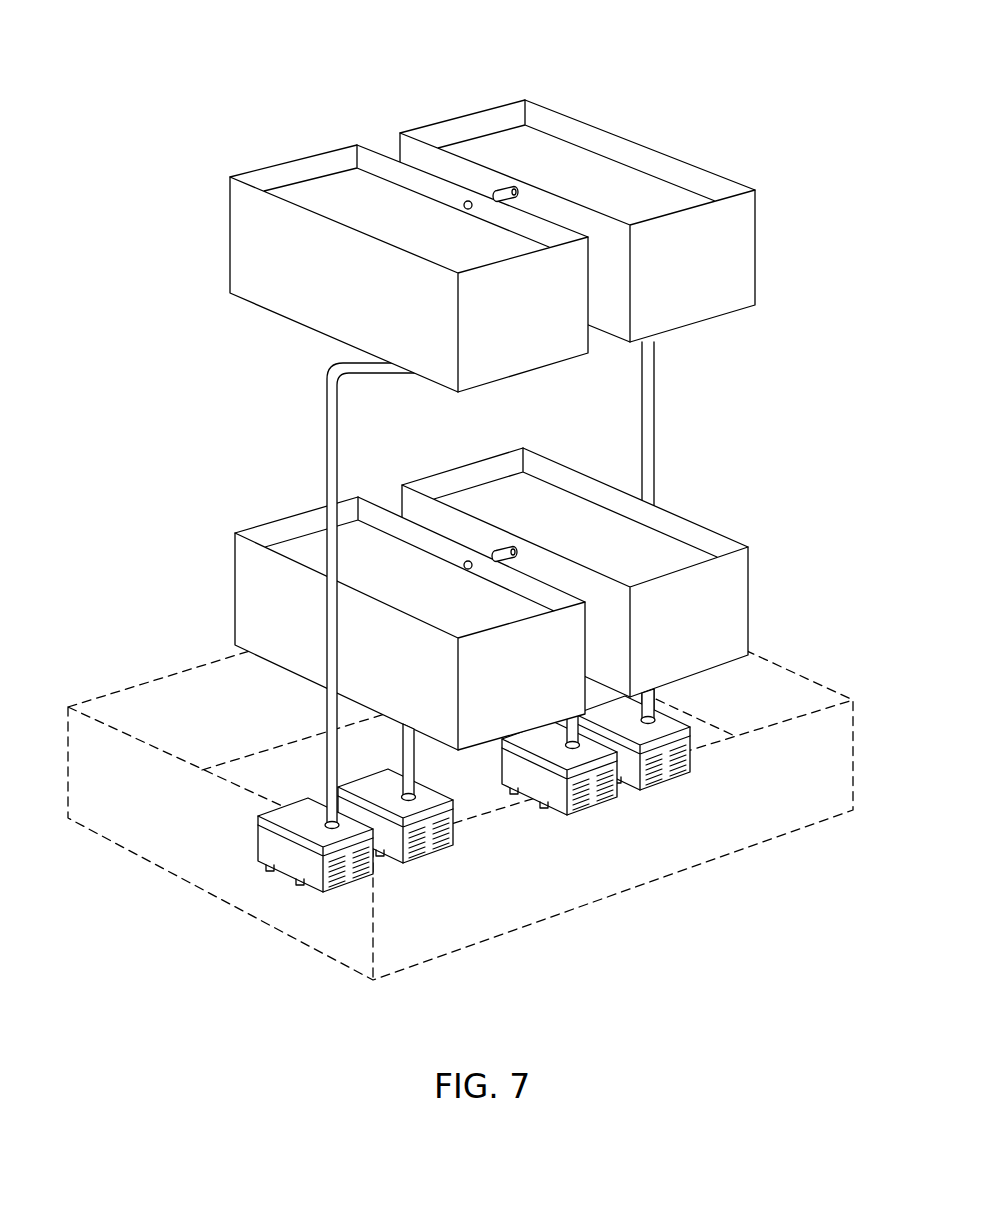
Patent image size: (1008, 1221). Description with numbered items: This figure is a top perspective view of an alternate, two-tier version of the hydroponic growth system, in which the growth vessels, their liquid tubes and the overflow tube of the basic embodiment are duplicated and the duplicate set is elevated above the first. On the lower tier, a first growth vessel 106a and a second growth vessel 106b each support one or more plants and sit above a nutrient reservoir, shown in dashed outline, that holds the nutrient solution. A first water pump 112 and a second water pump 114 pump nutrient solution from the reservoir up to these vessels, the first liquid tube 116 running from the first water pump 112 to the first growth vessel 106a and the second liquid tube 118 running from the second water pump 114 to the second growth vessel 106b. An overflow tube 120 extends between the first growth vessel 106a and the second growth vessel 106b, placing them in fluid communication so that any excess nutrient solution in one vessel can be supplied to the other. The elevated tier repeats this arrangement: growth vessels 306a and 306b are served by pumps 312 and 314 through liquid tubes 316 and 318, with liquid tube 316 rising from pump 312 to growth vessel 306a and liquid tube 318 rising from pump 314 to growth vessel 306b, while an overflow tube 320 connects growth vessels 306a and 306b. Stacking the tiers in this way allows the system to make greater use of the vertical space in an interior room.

The growth vessel 306a is at (305, 160).
The growth vessel 306b is at (481, 123).
The overflow tube 320 is at (502, 192).
The liquid tube 318 is at (656, 407).
The liquid tube 316 is at (327, 440).
The overflow tube 120 is at (497, 547).
The first growth vessel 106a is at (248, 595).
The second growth vessel 106b is at (738, 596).
The first liquid tube 116 is at (412, 764).
The second liquid tube 118 is at (566, 726).
The pump 312 is at (348, 875).
The first water pump 112 is at (430, 847).
The second water pump 114 is at (595, 798).
The pump 314 is at (668, 773).